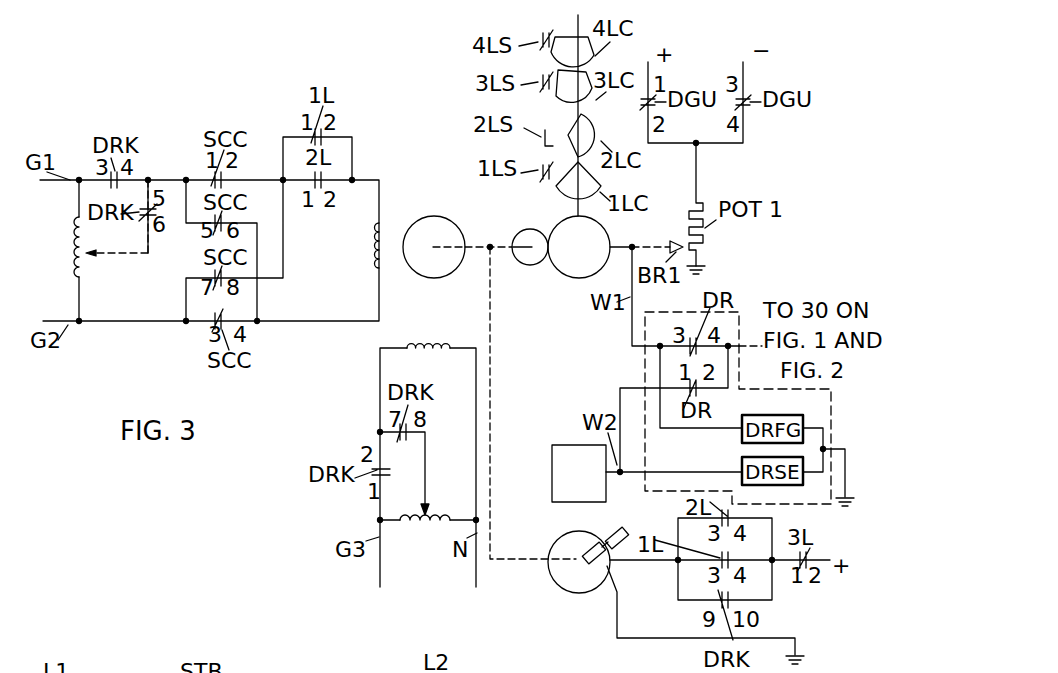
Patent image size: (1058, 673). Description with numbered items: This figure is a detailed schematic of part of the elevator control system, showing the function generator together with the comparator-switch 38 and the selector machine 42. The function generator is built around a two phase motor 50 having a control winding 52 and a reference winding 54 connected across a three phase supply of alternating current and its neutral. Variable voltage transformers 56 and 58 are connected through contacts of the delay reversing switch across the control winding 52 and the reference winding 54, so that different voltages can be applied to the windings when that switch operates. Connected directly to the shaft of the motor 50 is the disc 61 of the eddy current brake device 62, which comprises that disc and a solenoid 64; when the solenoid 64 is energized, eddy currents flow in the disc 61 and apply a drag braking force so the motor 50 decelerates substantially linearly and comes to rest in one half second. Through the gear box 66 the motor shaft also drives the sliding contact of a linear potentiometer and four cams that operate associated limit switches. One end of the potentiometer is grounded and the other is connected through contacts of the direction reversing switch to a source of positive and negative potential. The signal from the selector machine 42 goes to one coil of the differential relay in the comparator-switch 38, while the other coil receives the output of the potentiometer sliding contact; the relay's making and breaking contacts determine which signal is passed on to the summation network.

The comparator-switch 38 is at (742, 312).
The selector machine 42 is at (552, 462).
The two phase motor 50 is at (450, 166).
The control winding 52 is at (372, 246).
The reference winding 54 is at (433, 344).
The variable voltage transformer 56 is at (73, 248).
The variable voltage transformer 58 is at (437, 527).
The disc 61 is at (550, 571).
The eddy current brake device 62 is at (655, 527).
The solenoid 64 is at (607, 533).
The gear box 66 is at (579, 247).